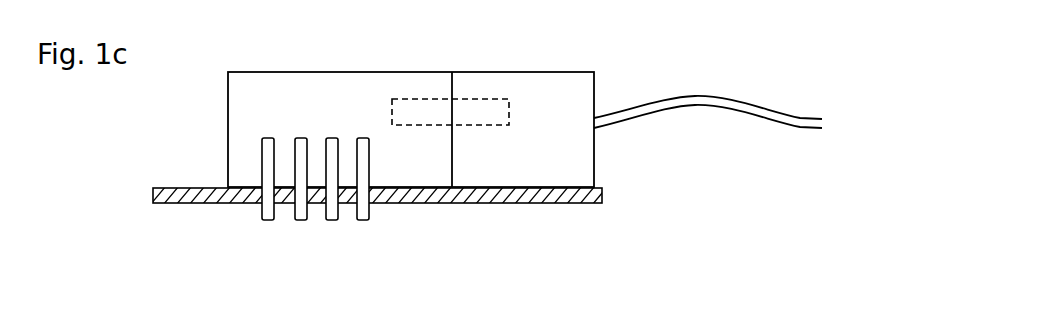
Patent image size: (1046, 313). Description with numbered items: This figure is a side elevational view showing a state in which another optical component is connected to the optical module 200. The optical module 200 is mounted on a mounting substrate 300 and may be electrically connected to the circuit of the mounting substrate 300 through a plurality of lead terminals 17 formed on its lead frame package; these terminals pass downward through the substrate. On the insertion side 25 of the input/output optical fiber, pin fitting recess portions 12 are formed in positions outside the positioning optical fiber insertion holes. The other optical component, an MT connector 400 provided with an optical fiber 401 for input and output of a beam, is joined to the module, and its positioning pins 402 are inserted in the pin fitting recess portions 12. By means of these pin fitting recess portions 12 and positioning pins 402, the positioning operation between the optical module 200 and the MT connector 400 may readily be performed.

The pin fitting recess portion 12 is at (409, 113).
The lead terminal 17 is at (267, 216).
The insertion side 25 is at (452, 165).
The optical module 200 is at (299, 96).
The mounting substrate 300 is at (166, 206).
The MT connector 400 is at (542, 98).
The optical fiber 401 is at (716, 96).
The positioning pin 402 is at (478, 113).